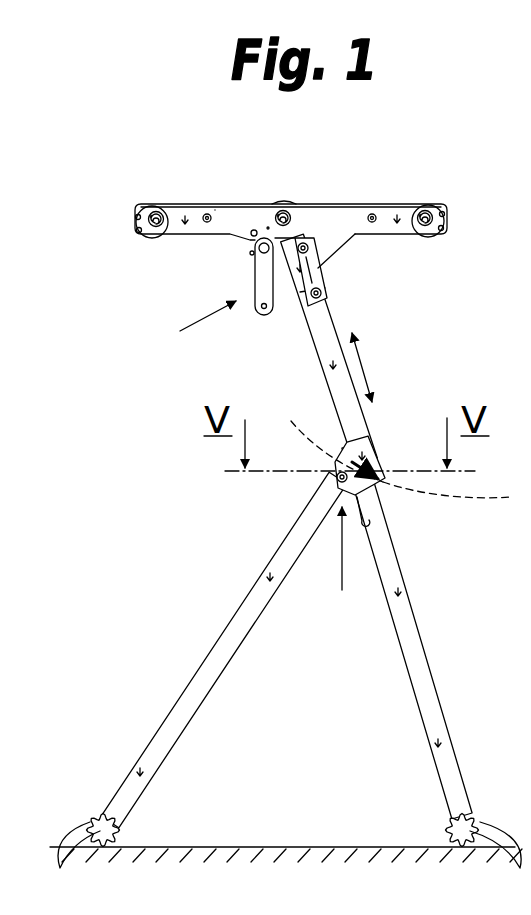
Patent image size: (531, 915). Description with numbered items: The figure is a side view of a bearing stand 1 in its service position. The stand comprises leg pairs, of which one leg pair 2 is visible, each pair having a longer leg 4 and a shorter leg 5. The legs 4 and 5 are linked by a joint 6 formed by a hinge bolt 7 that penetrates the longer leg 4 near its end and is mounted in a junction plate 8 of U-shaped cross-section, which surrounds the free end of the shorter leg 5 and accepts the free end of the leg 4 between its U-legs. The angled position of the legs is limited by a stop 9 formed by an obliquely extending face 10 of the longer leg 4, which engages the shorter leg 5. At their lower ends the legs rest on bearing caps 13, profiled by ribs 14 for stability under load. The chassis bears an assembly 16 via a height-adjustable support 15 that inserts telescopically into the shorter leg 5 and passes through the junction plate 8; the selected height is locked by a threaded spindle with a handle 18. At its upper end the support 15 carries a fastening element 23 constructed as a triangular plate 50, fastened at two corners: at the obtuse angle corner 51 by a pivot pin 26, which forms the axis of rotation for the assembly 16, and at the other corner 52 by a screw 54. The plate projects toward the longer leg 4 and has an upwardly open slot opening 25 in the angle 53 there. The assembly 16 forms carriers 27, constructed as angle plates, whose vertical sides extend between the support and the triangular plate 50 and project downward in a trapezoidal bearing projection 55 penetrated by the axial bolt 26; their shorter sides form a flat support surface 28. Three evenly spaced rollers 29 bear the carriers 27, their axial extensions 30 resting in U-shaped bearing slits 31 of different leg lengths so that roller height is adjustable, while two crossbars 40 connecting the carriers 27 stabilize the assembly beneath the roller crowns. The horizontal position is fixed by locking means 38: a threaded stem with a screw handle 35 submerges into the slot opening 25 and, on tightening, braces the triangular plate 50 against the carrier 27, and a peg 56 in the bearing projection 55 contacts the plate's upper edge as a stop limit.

The bearing stand 1 is at (100, 219).
The leg pair 2 is at (143, 682).
The longer leg 4 is at (235, 630).
The shorter leg 5 is at (406, 617).
The joint 6 is at (338, 561).
The hinge bolt 7 is at (336, 477).
The junction plate 8 is at (366, 453).
The stop 9 is at (457, 497).
The obliquely extending face 10 is at (329, 437).
The bearing cap 13 is at (103, 826).
The rib 14 is at (289, 861).
The support 15 is at (326, 345).
The assembly 16 is at (418, 187).
The handle 18 is at (368, 527).
The fastening element 23 is at (328, 270).
The slot opening 25 is at (268, 222).
The pivot pin 26 is at (308, 243).
The carrier 27 is at (237, 226).
The support surface 28 is at (200, 204).
The roller 29 is at (136, 218).
The axial extension 30 is at (139, 226).
The bearing slit 31 is at (150, 222).
The screw handle 35 is at (264, 318).
The locking means 38 is at (190, 324).
The crossbar 40 is at (205, 217).
The triangular plate 50 is at (276, 298).
The obtuse angle corner 51 is at (313, 236).
The corner 52 is at (321, 296).
The angle 53 is at (253, 257).
The screw 54 is at (358, 340).
The bearing projection 55 is at (246, 240).
The peg 56 is at (253, 230).